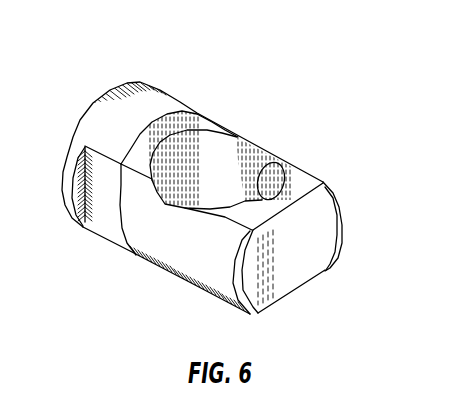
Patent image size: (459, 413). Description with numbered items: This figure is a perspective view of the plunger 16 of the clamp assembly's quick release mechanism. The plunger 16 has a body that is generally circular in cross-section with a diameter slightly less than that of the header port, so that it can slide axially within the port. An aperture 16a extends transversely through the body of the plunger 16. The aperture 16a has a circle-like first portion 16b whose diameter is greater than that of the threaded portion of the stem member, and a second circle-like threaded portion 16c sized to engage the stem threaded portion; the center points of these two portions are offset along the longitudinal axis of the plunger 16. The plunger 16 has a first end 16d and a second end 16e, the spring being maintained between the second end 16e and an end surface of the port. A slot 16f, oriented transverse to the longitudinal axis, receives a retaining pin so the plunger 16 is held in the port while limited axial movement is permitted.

The plunger 16 is at (113, 36).
The aperture 16a is at (232, 171).
The first portion 16b is at (179, 147).
The second circle-like threaded portion 16c is at (278, 161).
The first end 16d is at (77, 124).
The second end 16e is at (290, 252).
The slot 16f is at (107, 226).